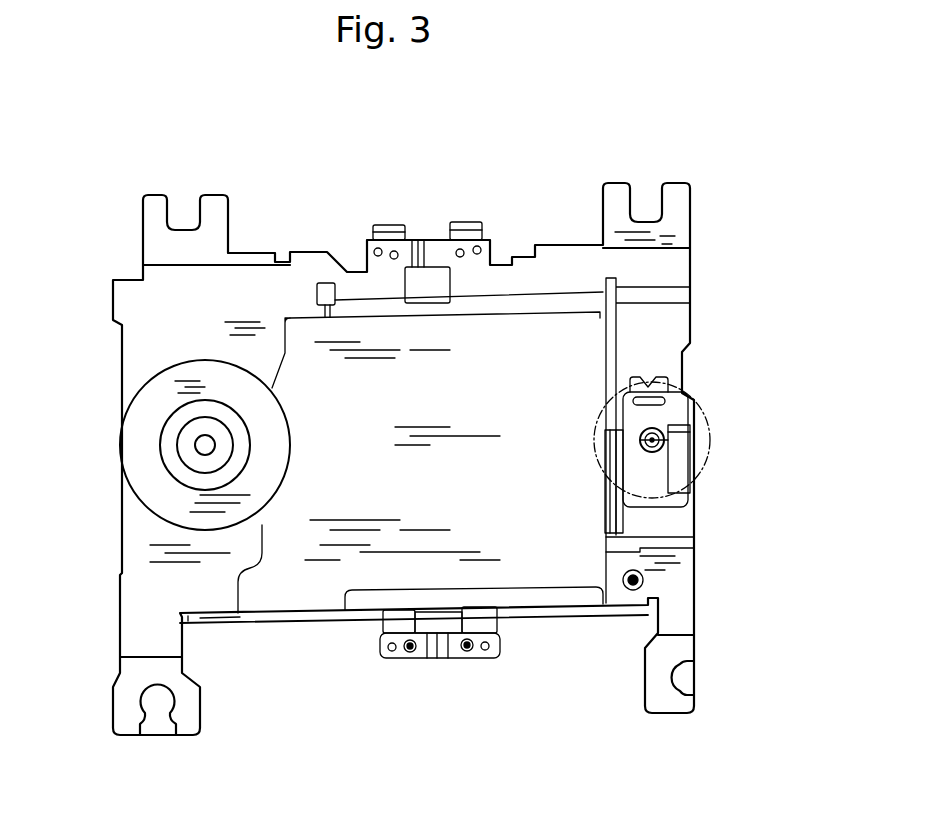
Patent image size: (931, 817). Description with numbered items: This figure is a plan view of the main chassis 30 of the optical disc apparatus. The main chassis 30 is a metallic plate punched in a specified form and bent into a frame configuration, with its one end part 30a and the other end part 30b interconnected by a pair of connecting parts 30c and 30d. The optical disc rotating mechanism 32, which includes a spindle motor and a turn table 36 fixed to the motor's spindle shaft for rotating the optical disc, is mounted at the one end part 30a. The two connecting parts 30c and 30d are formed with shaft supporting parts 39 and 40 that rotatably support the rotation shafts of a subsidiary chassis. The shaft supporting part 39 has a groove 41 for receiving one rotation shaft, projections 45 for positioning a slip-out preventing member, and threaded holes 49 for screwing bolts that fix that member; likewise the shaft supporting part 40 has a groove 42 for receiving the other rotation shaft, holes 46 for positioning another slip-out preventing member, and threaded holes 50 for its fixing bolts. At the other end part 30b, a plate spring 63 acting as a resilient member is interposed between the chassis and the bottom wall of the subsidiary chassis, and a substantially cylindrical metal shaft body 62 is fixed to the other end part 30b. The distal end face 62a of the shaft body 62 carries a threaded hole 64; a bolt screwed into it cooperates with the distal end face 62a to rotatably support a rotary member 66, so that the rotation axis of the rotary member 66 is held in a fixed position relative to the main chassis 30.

The main chassis 30 is at (700, 212).
The one end part 30a is at (148, 543).
The other end part 30b is at (695, 515).
The connecting part 30c is at (357, 625).
The connecting part 30d is at (300, 256).
The optical disc rotating mechanism 32 is at (140, 392).
The turn table 36 is at (142, 437).
The shaft supporting part 39 is at (465, 656).
The shaft supporting part 40 is at (490, 256).
The groove 41 is at (438, 658).
The groove 42 is at (430, 245).
The projections 45 is at (553, 690).
The holes 46 is at (477, 246).
The threaded holes 49 is at (515, 715).
The threaded holes 50 is at (462, 222).
The shaft body 62 is at (640, 430).
The distal end face 62a is at (656, 446).
The plate spring 63 is at (680, 393).
The threaded hole 64 is at (672, 425).
The rotary member 66 is at (608, 455).